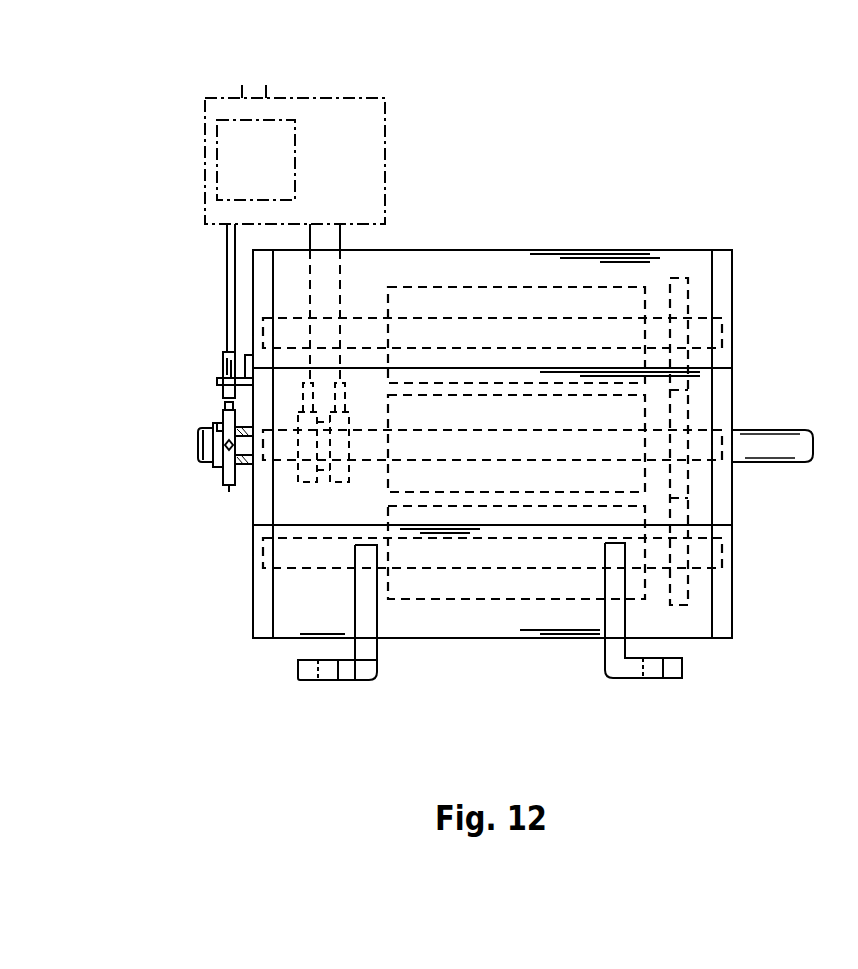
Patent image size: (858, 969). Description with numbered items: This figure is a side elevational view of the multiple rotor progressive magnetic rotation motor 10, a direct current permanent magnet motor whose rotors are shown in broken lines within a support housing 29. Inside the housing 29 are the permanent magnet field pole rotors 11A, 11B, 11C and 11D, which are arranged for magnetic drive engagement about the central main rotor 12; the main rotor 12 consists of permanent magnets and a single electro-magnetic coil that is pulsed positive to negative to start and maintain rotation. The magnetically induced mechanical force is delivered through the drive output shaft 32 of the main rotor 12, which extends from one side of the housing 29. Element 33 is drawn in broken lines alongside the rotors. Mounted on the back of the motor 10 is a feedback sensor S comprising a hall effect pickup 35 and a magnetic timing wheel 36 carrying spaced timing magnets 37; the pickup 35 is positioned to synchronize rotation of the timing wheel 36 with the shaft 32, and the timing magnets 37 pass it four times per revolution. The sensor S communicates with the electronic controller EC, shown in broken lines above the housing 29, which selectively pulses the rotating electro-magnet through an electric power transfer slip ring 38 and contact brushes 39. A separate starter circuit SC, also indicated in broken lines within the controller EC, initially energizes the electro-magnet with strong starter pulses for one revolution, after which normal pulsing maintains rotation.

The progressive magnetic rotation motor 10 is at (633, 247).
The support housing 29 is at (477, 260).
The field pole rotor 11A is at (500, 467).
The field pole rotor 11B is at (495, 359).
The field pole rotor 11C is at (608, 467).
The field pole rotor 11D is at (500, 577).
The main rotor 12 is at (545, 467).
The magnetic element 33 is at (688, 297).
The drive output shaft 32 is at (770, 428).
The hall effect pickup 35 is at (223, 350).
The magnetic timing wheel 36 is at (220, 425).
The timing magnet 37 is at (230, 487).
The electric power transfer slip ring 38 is at (307, 483).
The contact brushes 39 is at (307, 383).
The feedback sensor S is at (220, 376).
The electronic controller EC is at (386, 150).
The starter circuit SC is at (292, 165).